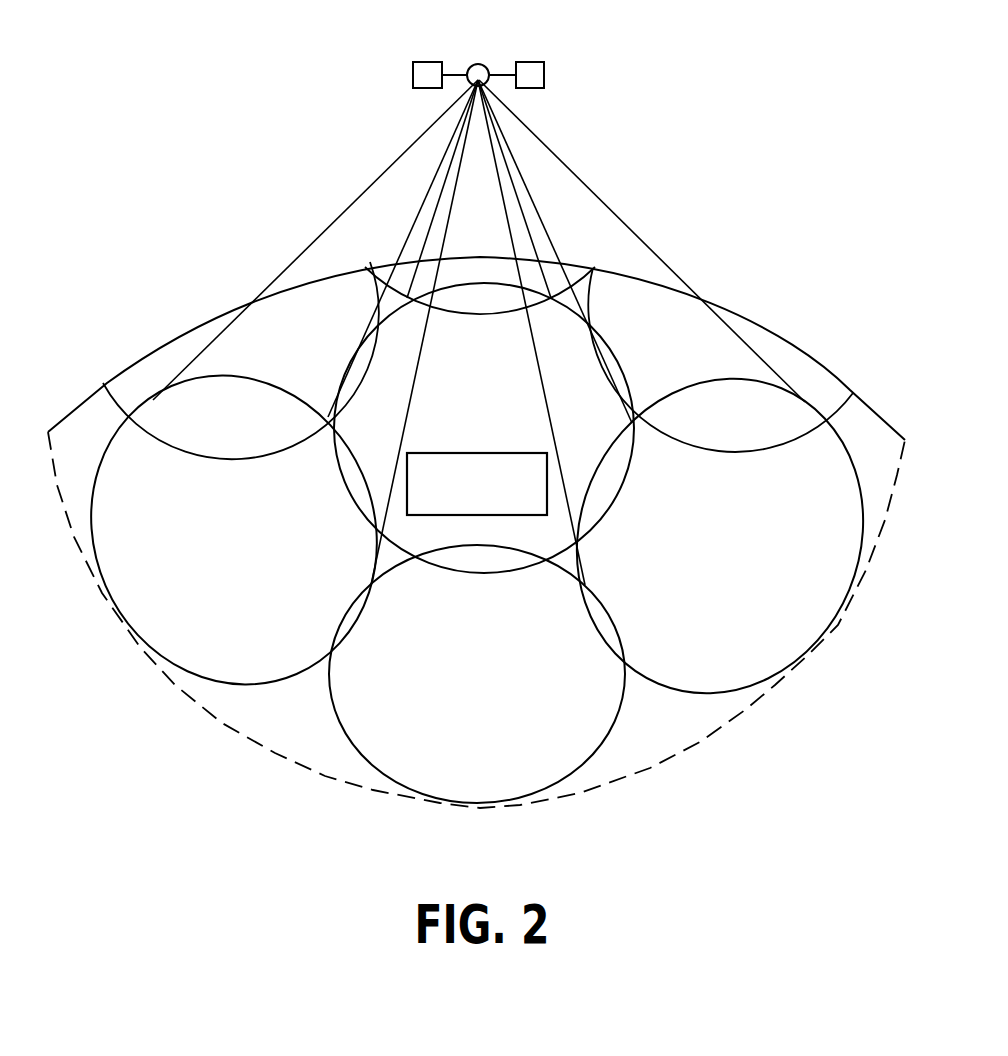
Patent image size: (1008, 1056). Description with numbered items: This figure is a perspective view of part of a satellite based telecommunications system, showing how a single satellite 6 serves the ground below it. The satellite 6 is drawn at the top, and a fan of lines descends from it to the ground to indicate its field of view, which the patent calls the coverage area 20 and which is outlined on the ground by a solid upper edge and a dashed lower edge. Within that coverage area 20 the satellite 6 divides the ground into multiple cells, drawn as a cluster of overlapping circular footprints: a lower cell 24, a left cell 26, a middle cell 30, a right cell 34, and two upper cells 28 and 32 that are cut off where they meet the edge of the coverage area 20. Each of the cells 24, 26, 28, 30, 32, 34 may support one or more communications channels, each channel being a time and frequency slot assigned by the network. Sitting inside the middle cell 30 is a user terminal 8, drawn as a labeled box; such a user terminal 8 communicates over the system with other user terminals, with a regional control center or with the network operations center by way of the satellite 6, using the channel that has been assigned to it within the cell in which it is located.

The satellite 6 is at (523, 62).
The user terminal 8 is at (480, 453).
The coverage area 20 is at (237, 727).
The cell 24 is at (554, 770).
The cell 26 is at (357, 442).
The cell 28 is at (333, 283).
The cell 30 is at (474, 268).
The cell 32 is at (767, 342).
The cell 34 is at (833, 581).